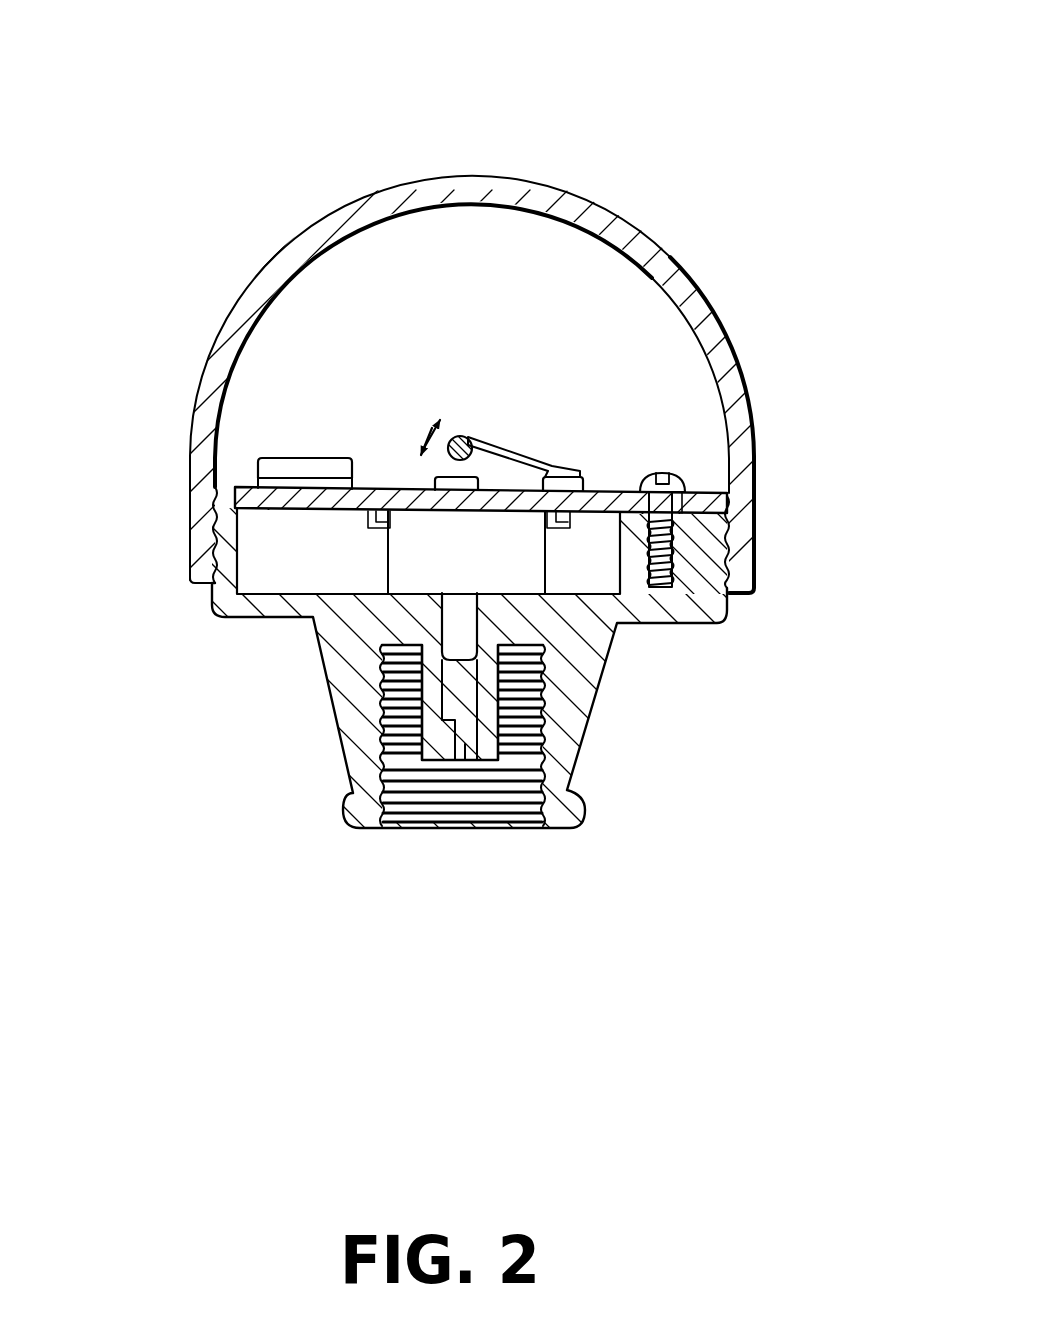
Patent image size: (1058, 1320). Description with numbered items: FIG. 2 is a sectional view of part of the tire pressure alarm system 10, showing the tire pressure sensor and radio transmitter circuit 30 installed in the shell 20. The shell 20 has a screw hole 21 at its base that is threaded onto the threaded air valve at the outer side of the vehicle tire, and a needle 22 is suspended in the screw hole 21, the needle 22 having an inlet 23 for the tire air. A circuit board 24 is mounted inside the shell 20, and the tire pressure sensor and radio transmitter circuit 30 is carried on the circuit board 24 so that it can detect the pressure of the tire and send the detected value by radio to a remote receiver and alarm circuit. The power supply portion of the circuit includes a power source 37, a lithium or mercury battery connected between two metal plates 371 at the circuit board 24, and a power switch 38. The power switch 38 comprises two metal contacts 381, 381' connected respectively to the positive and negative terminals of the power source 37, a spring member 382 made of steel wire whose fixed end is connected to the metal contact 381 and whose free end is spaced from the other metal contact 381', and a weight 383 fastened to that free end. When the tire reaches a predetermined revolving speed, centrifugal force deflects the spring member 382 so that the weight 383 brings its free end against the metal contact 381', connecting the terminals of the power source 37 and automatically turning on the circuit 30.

The tire pressure alarm system 10 is at (656, 128).
The shell 20 is at (338, 213).
The screw hole 21 is at (407, 797).
The needle 22 is at (465, 676).
The inlet 23 is at (472, 760).
The circuit board 24 is at (632, 478).
The tire pressure sensor and radio transmitter circuit 30 is at (371, 426).
The power source 37 is at (256, 482).
The metal plates 371 is at (272, 458).
The power switch 38 is at (566, 438).
The metal contact 381 is at (685, 410).
The metal contact 381' is at (506, 303).
The spring member 382 is at (511, 446).
The weight 383 is at (470, 438).